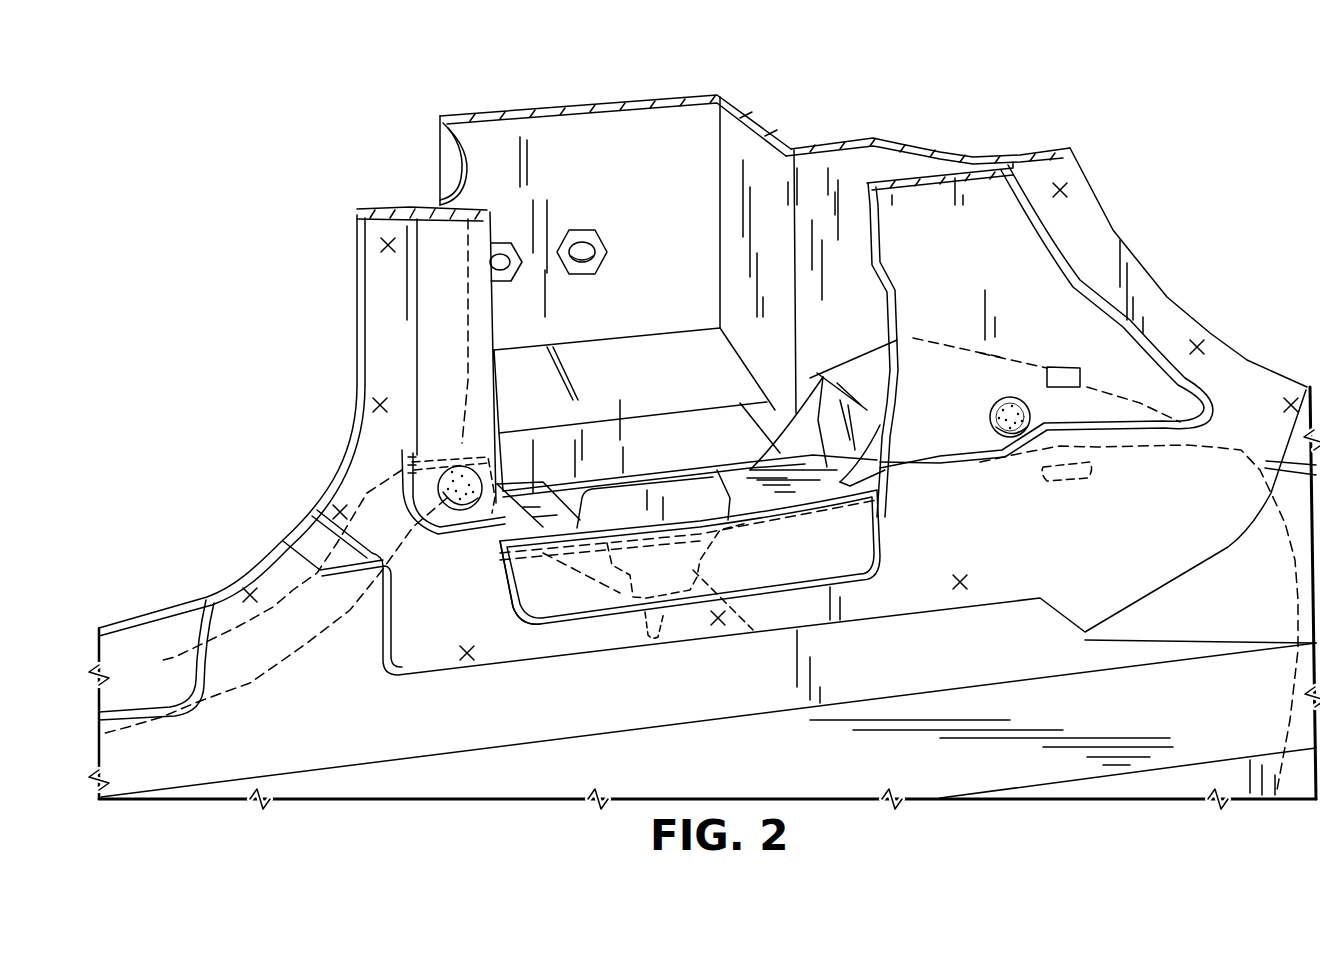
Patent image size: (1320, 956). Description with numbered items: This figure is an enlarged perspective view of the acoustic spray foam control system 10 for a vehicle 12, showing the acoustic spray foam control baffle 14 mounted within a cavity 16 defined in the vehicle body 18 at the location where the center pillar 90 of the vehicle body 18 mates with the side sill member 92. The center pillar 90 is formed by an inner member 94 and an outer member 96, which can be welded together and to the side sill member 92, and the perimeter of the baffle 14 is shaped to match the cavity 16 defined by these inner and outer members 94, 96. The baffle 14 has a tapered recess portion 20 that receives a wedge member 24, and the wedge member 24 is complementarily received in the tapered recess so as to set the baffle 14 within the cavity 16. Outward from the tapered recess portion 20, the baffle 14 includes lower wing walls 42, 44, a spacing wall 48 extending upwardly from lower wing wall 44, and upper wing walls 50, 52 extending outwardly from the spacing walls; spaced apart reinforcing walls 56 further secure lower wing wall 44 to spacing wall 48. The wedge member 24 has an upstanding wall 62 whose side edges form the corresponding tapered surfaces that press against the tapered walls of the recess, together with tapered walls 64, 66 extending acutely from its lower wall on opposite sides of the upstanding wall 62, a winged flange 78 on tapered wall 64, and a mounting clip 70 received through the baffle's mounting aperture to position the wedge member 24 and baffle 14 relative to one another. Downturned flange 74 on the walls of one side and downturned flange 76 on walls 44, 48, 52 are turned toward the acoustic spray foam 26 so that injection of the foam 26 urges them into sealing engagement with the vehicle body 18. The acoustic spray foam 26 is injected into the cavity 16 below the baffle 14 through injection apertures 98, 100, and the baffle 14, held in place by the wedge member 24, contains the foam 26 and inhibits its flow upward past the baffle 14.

The acoustic spray foam control system 10 is at (876, 340).
The vehicle 12 is at (468, 785).
The acoustic spray foam control baffle 14 is at (740, 458).
The cavity 16 is at (828, 343).
The vehicle body 18 is at (810, 148).
The tapered recess portion 20 is at (730, 563).
The wedge member 24 is at (668, 478).
The acoustic spray foam 26 is at (1143, 400).
The lower wing wall 42 is at (535, 490).
The lower wing wall 44 is at (782, 505).
The spacing wall 48 is at (850, 423).
The upper wing wall 50 is at (497, 357).
The upper wing wall 52 is at (867, 375).
The reinforcing walls 56 is at (810, 447).
The upstanding wall 62 is at (605, 507).
The tapered wall 64 is at (573, 507).
The tapered wall 66 is at (753, 630).
The mounting clip 70 is at (667, 635).
The downturned flange 74 is at (400, 465).
The downturned flange 76 is at (1090, 372).
The winged flange 78 is at (577, 495).
The center pillar 90 is at (732, 92).
The side sill member 92 is at (1148, 793).
The inner member 94 is at (1013, 238).
The outer member 96 is at (981, 158).
The injection aperture 98 is at (450, 510).
The injection aperture 100 is at (1010, 437).